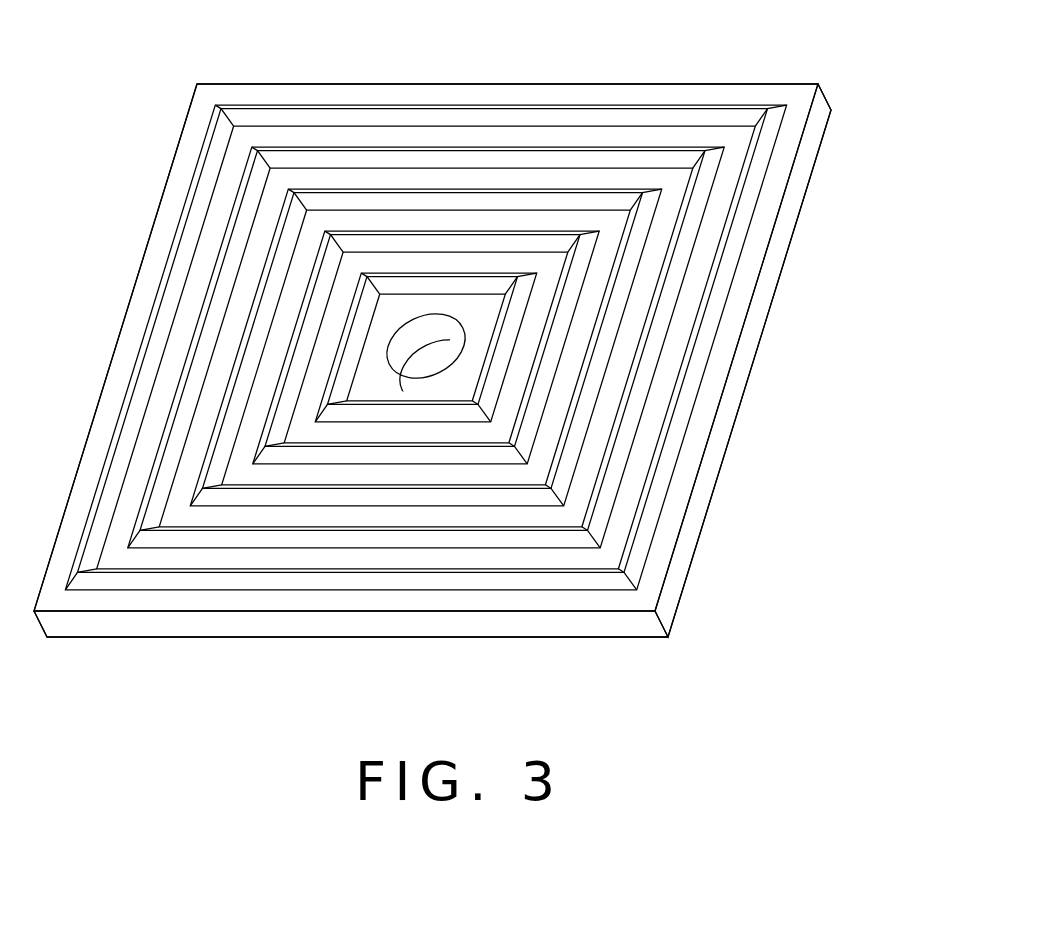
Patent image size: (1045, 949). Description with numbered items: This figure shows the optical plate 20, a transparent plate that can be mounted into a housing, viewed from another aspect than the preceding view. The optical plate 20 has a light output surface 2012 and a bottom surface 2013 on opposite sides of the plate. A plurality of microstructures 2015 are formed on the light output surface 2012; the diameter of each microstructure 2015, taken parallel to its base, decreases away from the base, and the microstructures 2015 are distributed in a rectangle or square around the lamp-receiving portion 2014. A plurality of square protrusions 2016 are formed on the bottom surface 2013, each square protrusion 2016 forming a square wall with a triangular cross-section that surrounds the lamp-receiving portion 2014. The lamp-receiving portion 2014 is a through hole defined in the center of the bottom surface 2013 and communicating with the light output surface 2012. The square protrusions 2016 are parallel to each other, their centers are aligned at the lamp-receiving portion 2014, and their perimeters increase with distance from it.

The optical plate 20 is at (160, 66).
The light output surface 2012 is at (772, 333).
The bottom surface 2013 is at (800, 122).
The lamp-receiving portion 2014 is at (438, 345).
The microstructures 2015 is at (795, 223).
The square protrusions 2016 is at (757, 175).